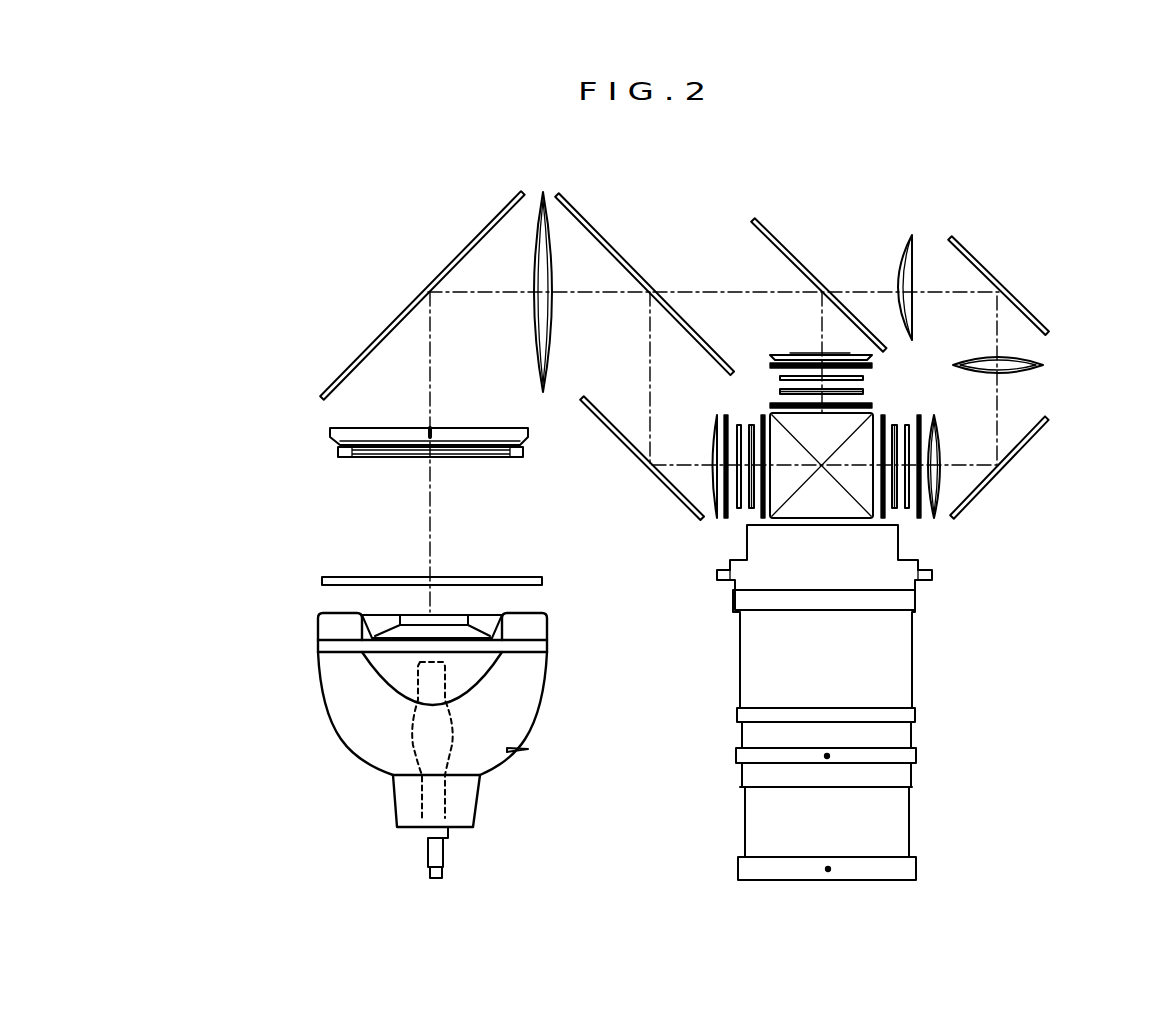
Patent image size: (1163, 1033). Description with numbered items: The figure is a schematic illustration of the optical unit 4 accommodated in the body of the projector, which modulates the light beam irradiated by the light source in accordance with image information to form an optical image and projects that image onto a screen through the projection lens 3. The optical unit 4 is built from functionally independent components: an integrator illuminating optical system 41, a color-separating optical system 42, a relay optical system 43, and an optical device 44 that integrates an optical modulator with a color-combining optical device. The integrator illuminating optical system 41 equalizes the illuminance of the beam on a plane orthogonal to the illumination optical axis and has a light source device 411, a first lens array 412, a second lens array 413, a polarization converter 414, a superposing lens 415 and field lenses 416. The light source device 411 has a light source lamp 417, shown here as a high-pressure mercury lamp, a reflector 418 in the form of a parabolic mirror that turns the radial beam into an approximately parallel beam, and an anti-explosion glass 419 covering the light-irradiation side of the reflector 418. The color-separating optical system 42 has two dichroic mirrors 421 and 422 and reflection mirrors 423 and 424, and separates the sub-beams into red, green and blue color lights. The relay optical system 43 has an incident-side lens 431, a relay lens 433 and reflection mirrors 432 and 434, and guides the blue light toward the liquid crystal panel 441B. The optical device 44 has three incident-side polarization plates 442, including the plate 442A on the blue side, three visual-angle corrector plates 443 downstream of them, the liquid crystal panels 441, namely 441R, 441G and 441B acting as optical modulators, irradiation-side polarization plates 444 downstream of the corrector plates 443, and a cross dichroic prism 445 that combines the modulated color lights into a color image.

The projection lens 3 is at (868, 798).
The optical unit 4 is at (1094, 196).
The integrator illuminating optical system 41 is at (295, 283).
The color-separating optical system 42 is at (689, 198).
The relay optical system 43 is at (1050, 296).
The optical device 44 is at (901, 512).
The light source device 411 is at (237, 665).
The first lens array 412 is at (322, 581).
The second lens array 413 is at (338, 452).
The polarization converter 414 is at (330, 433).
The superposing lens 415 is at (541, 191).
The field lens 416 is at (795, 352).
The light source lamp 417 is at (413, 718).
The reflector 418 is at (358, 740).
The anti-explosion glass 419 is at (360, 648).
The dichroic mirror 421 is at (582, 212).
The dichroic mirror 422 is at (770, 236).
The reflection mirror 423 is at (607, 423).
The reflection mirror 424 is at (345, 375).
The incident-side lens 431 is at (908, 235).
The reflection mirror 432 is at (972, 258).
The relay lens 433 is at (1043, 365).
The reflection mirror 434 is at (1040, 430).
The liquid crystal panel 441 is at (829, 466).
The liquid crystal panel 441R is at (750, 510).
The liquid crystal panel 441G is at (863, 392).
The liquid crystal panel 441B is at (895, 505).
The incident-side polarization plate 442 is at (770, 365).
The incident-side polarizing plate 442A is at (920, 517).
The visual-angle corrector plate 443 is at (840, 378).
The irradiation-side polarization plate 444 is at (770, 405).
The cross dichroic prism 445 is at (787, 497).